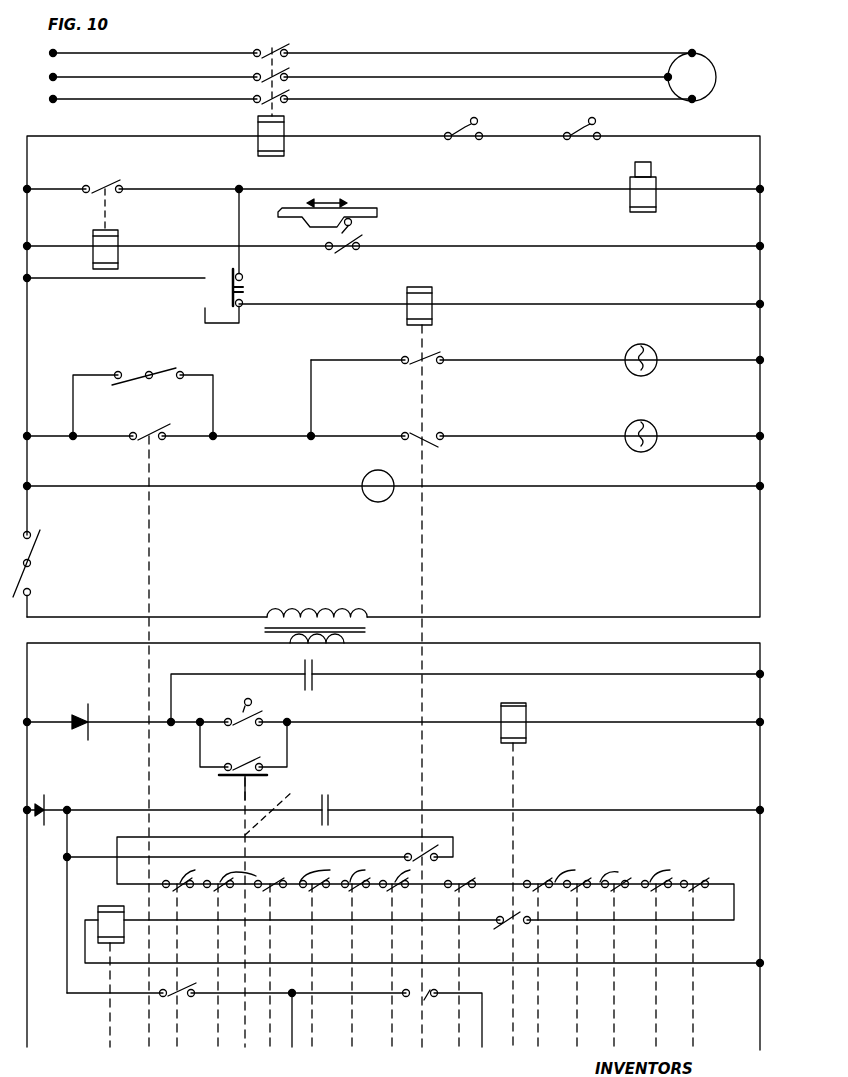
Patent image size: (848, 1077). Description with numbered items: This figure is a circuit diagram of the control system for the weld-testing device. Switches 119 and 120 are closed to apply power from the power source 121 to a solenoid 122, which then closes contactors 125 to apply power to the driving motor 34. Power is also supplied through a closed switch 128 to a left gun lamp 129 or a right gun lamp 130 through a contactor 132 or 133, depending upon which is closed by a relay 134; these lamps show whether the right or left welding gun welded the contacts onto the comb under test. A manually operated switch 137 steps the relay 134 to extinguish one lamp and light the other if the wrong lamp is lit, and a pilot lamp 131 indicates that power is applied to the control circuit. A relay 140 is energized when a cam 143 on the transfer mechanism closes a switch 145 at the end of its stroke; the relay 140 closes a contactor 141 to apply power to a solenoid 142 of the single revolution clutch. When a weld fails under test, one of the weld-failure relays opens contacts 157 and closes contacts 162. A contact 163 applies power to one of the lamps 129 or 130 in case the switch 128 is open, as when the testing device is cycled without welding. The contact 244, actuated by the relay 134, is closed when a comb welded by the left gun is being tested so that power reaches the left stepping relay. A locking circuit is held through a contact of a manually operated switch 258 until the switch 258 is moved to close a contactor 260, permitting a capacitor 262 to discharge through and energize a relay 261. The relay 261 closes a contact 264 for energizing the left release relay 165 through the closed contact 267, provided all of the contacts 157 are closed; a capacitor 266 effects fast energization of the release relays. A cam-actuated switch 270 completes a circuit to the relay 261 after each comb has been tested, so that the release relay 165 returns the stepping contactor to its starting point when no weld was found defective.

The driving motor 34 is at (716, 78).
The contactors 125 is at (283, 46).
The solenoid 122 is at (262, 141).
The switch 120 is at (548, 152).
The contactor 141 is at (110, 184).
The relay 140 is at (105, 243).
The solenoid 142 is at (640, 198).
The cam 143 is at (363, 215).
The switch 145 is at (340, 250).
The manually operated switch 137 is at (245, 296).
The relay 134 is at (420, 297).
The switch 128 is at (160, 370).
The contact 163 is at (150, 430).
The contactor 132 is at (430, 355).
The contactor 133 is at (432, 445).
The right gun lamp 130 is at (628, 370).
The left gun lamp 129 is at (630, 446).
The pilot lamp 131 is at (373, 490).
The switch 119 is at (25, 578).
The power source 121 is at (368, 628).
The capacitor 262 is at (316, 670).
The switch 270 is at (260, 712).
The relay 261 is at (512, 722).
The contactor 260 is at (248, 762).
The manually operated switch 258 is at (271, 806).
The capacitor 266 is at (330, 805).
The contact 267 is at (425, 850).
The contacts 157 is at (615, 858).
The left release relay 165 is at (118, 903).
The contact 264 is at (505, 926).
The contact 162 is at (182, 985).
The contact 244 is at (426, 995).